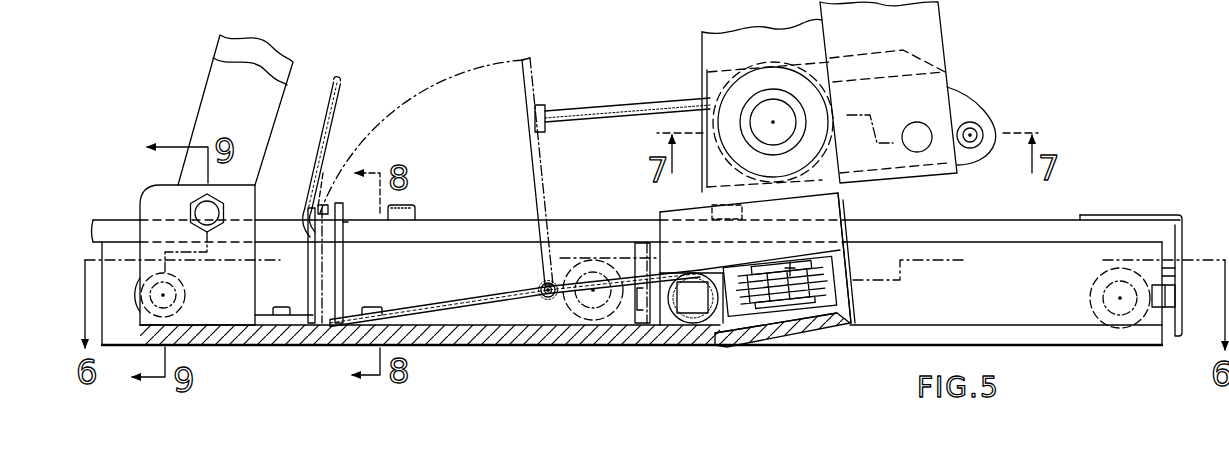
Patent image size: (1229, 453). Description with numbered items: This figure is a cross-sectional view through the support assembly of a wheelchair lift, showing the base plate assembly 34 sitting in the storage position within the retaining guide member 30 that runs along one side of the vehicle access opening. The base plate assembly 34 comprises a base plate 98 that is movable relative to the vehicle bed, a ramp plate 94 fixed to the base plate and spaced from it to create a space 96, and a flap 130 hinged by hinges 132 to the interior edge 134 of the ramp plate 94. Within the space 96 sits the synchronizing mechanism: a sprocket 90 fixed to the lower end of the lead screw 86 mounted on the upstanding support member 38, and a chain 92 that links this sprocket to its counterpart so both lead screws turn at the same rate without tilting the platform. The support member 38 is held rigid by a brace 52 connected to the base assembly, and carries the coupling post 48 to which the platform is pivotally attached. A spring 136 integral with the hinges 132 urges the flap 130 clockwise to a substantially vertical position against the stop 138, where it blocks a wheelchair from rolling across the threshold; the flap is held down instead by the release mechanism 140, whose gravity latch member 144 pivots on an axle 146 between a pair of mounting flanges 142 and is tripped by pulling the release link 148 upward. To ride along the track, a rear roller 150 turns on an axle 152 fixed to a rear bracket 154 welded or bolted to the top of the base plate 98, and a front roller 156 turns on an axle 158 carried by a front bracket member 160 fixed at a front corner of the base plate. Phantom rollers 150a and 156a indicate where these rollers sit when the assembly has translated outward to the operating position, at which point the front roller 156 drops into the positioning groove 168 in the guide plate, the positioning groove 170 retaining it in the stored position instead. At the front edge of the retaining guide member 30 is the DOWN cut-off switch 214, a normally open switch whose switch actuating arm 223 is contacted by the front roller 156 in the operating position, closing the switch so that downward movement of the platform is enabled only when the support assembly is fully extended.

The retaining guide member 30 is at (443, 222).
The base plate assembly 34 is at (518, 274).
The upstanding support member 38 is at (703, 47).
The coupling post 48 is at (947, 40).
The brace 52 is at (212, 70).
The lead screw 86 is at (760, 293).
The sprocket 90 is at (847, 303).
The chain 92 is at (847, 280).
The ramp plate 94 is at (790, 273).
The space 96 is at (730, 310).
The base plate 98 is at (447, 327).
The flap 130 is at (467, 302).
The hinges 132 is at (545, 300).
The interior edge 134 is at (553, 283).
The spring 136 is at (550, 297).
The stop 138 is at (603, 110).
The release mechanism 140 is at (322, 191).
The mounting flanges 142 is at (318, 255).
The gravity latch member 144 is at (323, 281).
The axle 146 is at (349, 224).
The release link 148 is at (330, 90).
The roller 150 is at (138, 290).
The phantom roller 150a is at (598, 272).
The axle 152 is at (166, 296).
The rear bracket 154 is at (235, 316).
The front roller 156 is at (660, 318).
The phantom roller 156a is at (1135, 317).
The axle 158 is at (690, 296).
The front bracket member 160 is at (647, 315).
The positioning groove 168 is at (1108, 323).
The positioning groove 170 is at (687, 315).
The DOWN cut-off switch 214 is at (1160, 233).
The switch actuating arm 223 is at (1178, 297).